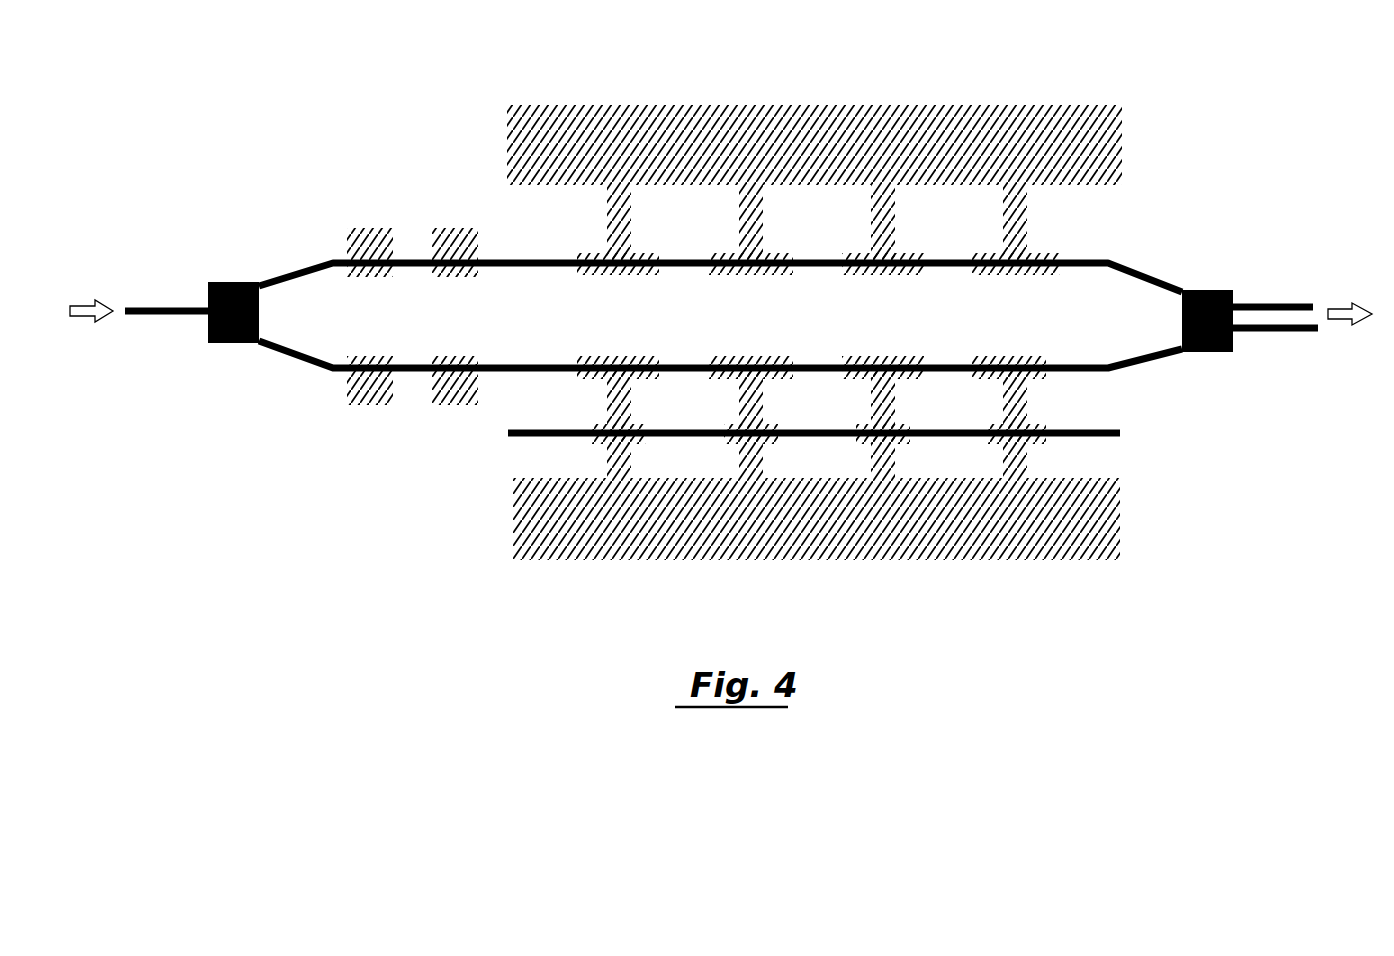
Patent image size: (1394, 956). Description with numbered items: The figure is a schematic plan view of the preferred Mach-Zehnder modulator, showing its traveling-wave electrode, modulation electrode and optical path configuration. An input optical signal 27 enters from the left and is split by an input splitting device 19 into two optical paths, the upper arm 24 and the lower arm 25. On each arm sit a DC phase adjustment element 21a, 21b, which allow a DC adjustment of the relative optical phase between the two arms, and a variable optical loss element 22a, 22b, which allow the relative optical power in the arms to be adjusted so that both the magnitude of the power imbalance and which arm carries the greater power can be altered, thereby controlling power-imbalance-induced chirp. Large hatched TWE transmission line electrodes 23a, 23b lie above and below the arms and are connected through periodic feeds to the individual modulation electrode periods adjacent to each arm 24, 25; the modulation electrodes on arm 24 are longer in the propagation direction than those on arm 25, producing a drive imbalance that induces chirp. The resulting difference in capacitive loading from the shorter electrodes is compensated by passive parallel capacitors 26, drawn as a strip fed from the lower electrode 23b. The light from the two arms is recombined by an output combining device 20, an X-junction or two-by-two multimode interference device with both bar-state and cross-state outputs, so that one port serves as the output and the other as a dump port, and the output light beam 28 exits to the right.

The input splitting device 19 is at (222, 282).
The output combining device 20 is at (1203, 290).
The DC phase adjustment element 21a is at (362, 228).
The DC phase adjustment element 21b is at (372, 400).
The variable optical loss element 22a is at (455, 228).
The variable optical loss element 22b is at (447, 400).
The TWE transmission line electrode 23a is at (778, 103).
The TWE transmission line electrode 23b is at (674, 563).
The arm 24 is at (1056, 257).
The arm 25 is at (1056, 381).
The passive parallel capacitors 26 is at (1050, 442).
The input optical signal 27 is at (80, 299).
The output light beam 28 is at (1342, 300).